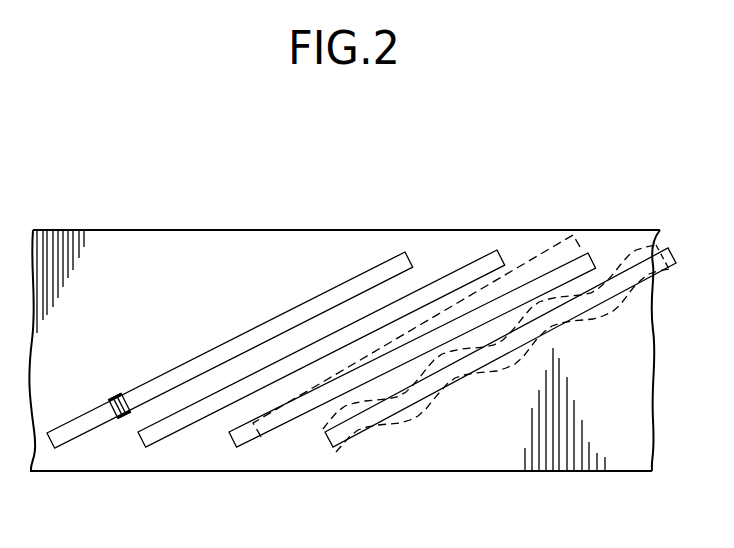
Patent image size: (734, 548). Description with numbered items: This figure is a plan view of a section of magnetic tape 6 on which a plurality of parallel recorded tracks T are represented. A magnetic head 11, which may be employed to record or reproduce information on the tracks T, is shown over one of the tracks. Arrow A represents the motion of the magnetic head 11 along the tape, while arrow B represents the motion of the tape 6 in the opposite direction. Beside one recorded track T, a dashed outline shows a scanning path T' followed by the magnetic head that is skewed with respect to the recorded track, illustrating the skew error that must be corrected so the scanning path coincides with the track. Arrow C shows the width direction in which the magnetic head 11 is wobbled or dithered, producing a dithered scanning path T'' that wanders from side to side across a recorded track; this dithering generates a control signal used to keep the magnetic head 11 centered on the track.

The magnetic tape 6 is at (303, 455).
The magnetic head 11 is at (112, 421).
The recorded track T is at (341, 317).
The scanning path T' is at (424, 311).
The dithered scanning path T'' is at (518, 323).
The arrow representing motion of magnetic head A is at (147, 366).
The arrow representing motion of tape B is at (167, 252).
The arrow indicating width direction of dithering C is at (383, 382).